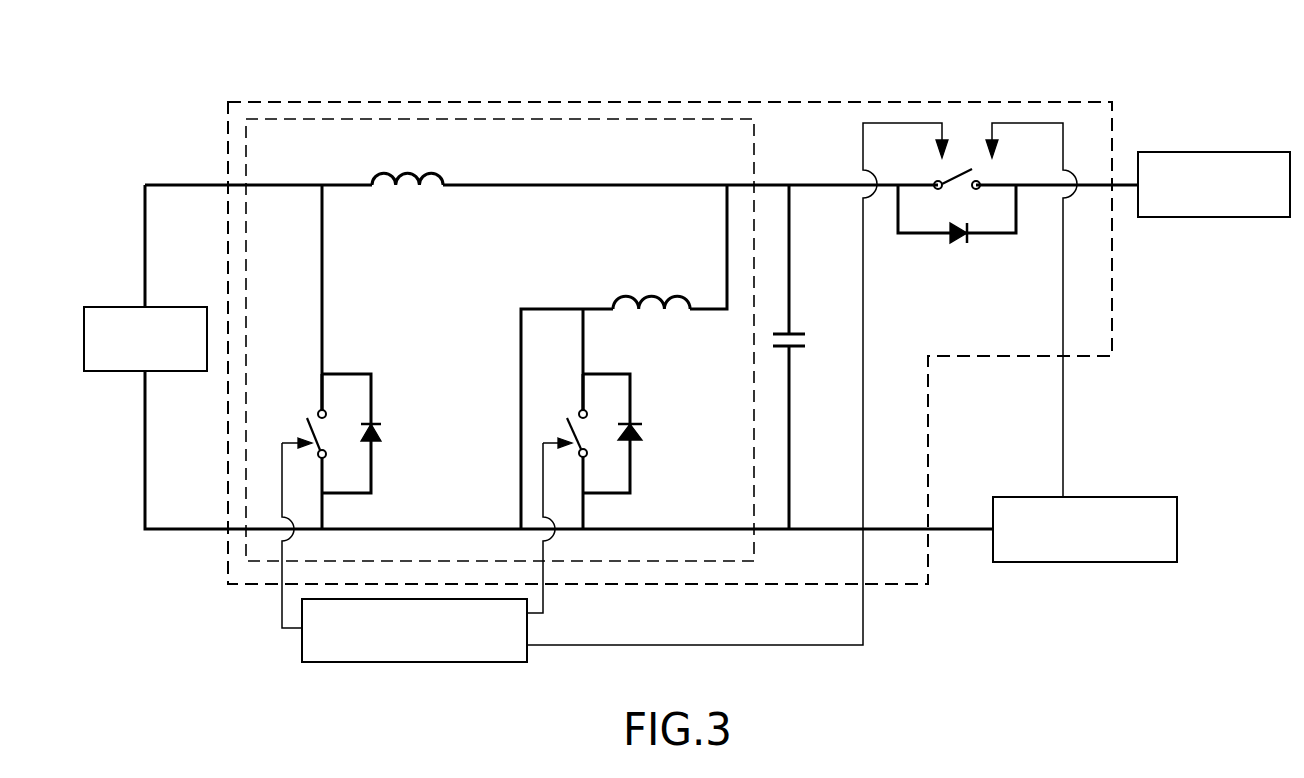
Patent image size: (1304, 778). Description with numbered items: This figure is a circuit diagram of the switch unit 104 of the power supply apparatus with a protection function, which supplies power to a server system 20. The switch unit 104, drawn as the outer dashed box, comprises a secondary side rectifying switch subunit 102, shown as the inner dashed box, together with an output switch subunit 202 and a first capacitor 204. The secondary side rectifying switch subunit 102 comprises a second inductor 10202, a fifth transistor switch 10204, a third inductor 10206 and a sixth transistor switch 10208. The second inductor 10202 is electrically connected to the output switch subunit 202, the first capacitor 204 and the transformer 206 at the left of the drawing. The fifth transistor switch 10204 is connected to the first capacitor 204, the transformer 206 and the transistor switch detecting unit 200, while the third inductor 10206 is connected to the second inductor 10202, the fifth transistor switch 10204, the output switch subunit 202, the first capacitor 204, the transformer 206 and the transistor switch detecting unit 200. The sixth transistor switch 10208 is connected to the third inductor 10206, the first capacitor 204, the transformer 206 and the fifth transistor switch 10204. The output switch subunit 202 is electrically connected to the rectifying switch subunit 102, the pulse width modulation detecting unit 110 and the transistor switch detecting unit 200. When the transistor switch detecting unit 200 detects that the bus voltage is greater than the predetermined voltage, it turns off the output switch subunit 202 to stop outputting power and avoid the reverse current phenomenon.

The server system 20 is at (1208, 157).
The secondary side rectifying switch subunit 102 is at (631, 143).
The switch unit 104 is at (823, 120).
The pulse width modulation detecting unit 110 is at (463, 657).
The transistor switch detecting unit 200 is at (1120, 502).
The output switch subunit 202 is at (988, 243).
The first capacitor 204 is at (802, 363).
The transformer 206 is at (113, 315).
The second inductor 10202 is at (413, 160).
The fifth transistor switch 10204 is at (388, 407).
The third inductor 10206 is at (652, 293).
The sixth transistor switch 10208 is at (645, 408).